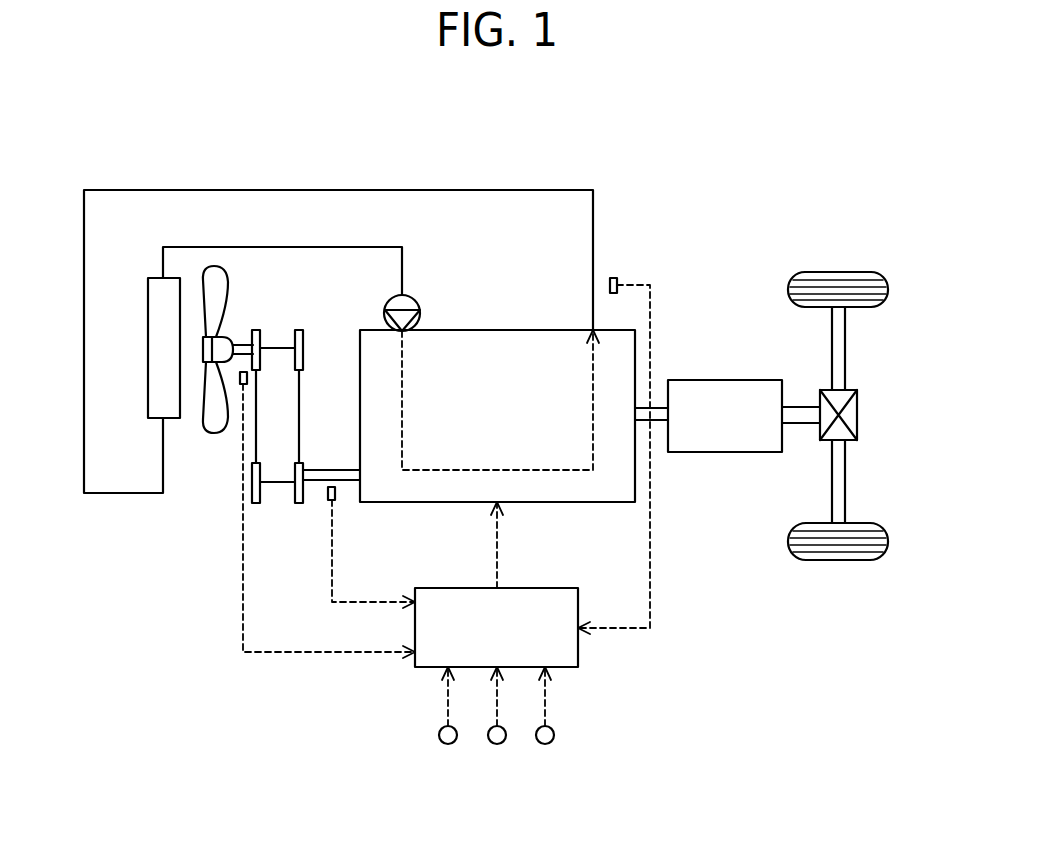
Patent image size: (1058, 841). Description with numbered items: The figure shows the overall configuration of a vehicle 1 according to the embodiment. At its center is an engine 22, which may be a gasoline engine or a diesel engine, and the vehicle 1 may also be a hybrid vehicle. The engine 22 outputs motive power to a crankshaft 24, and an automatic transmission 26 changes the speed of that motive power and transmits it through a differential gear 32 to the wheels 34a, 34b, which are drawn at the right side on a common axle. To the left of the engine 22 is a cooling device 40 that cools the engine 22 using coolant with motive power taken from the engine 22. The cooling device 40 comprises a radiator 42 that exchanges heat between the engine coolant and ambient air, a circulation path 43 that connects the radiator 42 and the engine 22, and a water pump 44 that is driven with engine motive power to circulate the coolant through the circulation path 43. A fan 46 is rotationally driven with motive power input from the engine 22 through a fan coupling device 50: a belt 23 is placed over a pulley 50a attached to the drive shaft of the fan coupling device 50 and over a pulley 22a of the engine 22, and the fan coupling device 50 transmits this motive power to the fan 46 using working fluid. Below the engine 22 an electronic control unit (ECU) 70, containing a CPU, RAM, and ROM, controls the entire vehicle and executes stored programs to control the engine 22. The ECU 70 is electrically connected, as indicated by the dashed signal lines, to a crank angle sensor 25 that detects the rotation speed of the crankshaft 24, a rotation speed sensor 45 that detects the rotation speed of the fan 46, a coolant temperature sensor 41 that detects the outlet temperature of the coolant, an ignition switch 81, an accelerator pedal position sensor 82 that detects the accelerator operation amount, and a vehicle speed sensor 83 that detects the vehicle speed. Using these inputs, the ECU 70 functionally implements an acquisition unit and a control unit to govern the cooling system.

The vehicle 1 is at (652, 202).
The engine 22 is at (488, 330).
The pulley 22a is at (300, 463).
The belt 23 is at (277, 463).
The crankshaft 24 is at (335, 469).
The crank angle sensor 25 is at (329, 501).
The automatic transmission 26 is at (716, 380).
The differential gear 32 is at (860, 412).
The wheel 34a is at (858, 560).
The wheel 34b is at (860, 272).
The cooling device 40 is at (354, 173).
The coolant temperature sensor 41 is at (614, 278).
The radiator 42 is at (148, 277).
The circulation path 43 is at (494, 190).
The water pump 44 is at (412, 297).
The rotation speed sensor 45 is at (243, 386).
The fan 46 is at (224, 268).
The fan coupling device 50 is at (280, 298).
The pulley 50a is at (258, 330).
The electronic control unit (ECU) 70 is at (547, 588).
The ignition switch 81 is at (545, 745).
The accelerator pedal position sensor 82 is at (497, 745).
The vehicle speed sensor 83 is at (448, 745).